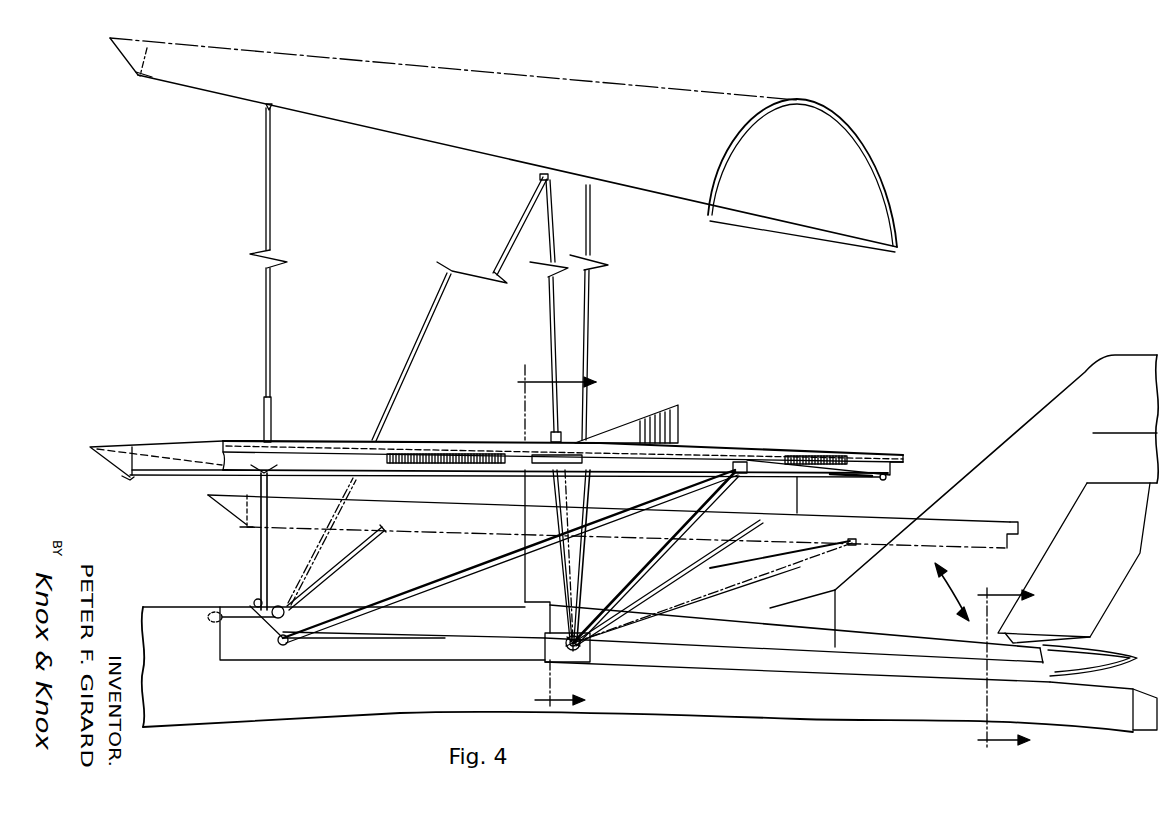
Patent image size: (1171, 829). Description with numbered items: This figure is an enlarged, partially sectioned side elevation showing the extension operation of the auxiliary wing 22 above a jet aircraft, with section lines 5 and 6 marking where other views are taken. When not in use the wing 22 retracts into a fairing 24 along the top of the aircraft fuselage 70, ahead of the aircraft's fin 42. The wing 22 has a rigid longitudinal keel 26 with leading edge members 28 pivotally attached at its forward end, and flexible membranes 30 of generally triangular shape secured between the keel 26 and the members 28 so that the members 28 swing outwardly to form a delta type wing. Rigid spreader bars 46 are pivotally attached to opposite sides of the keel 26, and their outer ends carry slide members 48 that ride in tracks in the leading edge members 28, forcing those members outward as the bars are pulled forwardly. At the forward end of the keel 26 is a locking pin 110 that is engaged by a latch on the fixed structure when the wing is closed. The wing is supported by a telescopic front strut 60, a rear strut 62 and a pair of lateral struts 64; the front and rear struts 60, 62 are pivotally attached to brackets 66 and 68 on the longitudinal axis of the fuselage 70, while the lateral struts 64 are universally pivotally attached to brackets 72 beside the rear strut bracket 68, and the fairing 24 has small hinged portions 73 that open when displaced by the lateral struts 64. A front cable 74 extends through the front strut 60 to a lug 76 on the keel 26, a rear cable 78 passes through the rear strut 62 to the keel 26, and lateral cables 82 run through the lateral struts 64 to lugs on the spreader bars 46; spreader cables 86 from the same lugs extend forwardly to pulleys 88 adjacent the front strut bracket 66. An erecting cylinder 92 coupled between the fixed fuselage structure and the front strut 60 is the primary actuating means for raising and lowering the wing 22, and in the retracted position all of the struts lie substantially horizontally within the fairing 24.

The auxiliary wing 22 is at (866, 150).
The fairing 24 is at (818, 665).
The keel 26 is at (412, 441).
The leading edge members 28 is at (157, 446).
The flexible membranes 30 is at (716, 92).
The fin 42 is at (1011, 430).
The spreader bars 46 is at (538, 178).
The slide members 48 is at (888, 478).
The front strut 60 is at (270, 540).
The rear strut 62 is at (591, 489).
The lateral struts 64 is at (554, 498).
The front strut bracket 66 is at (272, 645).
The rear strut bracket 68 is at (586, 650).
The aircraft fuselage 70 is at (163, 606).
The lateral strut brackets 72 is at (581, 660).
The hinged portions 73 is at (545, 646).
The front cable 74 is at (262, 310).
The lug 76 is at (254, 474).
The rear cable 78 is at (586, 328).
The lateral cables 82 is at (549, 312).
The spreader cables 86 is at (416, 338).
The pulleys 88 is at (282, 646).
The erecting cylinder 92 is at (254, 601).
The locking pin 110 is at (124, 479).
The section line 5 is at (567, 537).
The section line 6 is at (1015, 668).